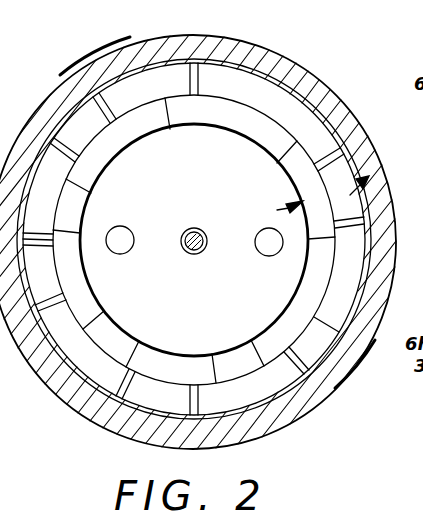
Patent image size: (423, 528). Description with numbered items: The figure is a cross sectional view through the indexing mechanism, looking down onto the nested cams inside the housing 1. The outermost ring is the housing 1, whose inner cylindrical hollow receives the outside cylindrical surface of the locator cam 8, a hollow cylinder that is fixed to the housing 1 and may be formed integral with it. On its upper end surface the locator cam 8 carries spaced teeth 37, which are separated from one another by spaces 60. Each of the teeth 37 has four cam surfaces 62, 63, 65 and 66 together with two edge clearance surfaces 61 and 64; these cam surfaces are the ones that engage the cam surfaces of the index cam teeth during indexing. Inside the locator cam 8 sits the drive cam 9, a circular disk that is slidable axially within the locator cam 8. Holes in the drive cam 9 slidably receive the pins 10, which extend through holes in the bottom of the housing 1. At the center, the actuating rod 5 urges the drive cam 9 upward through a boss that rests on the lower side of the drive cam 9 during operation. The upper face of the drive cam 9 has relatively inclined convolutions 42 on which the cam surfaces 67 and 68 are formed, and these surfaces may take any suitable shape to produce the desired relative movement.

The housing 1 is at (358, 362).
The actuating rod 5 is at (196, 230).
The locator cam 8 is at (370, 168).
The drive cam 9 is at (173, 318).
The pins 10 is at (122, 233).
The spaced teeth 37 is at (75, 128).
The relatively inclined convolutions 42 is at (306, 252).
The spaces 60 is at (295, 175).
The edge clearance surface 61 is at (301, 97).
The cam surface 62 is at (273, 80).
The cam surface 63 is at (249, 72).
The edge clearance surface 64 is at (160, 42).
The cam surface 65 is at (188, 80).
The cam surface 66 is at (222, 92).
The cam surface 67 is at (180, 115).
The cam surface 68 is at (148, 125).